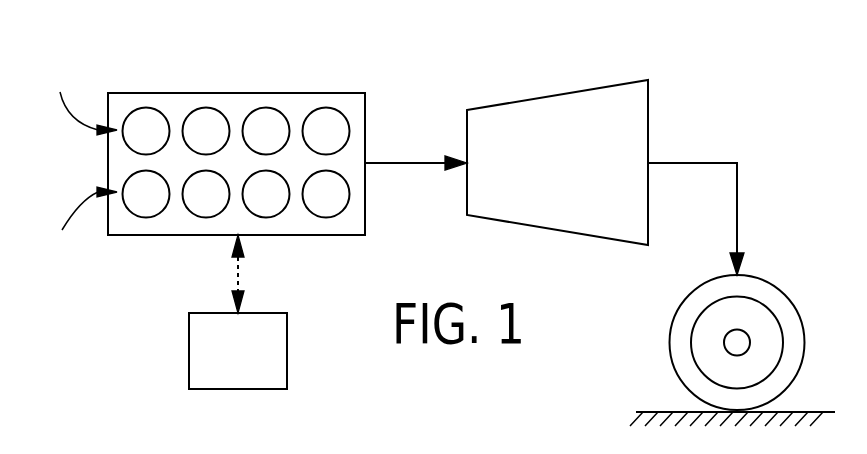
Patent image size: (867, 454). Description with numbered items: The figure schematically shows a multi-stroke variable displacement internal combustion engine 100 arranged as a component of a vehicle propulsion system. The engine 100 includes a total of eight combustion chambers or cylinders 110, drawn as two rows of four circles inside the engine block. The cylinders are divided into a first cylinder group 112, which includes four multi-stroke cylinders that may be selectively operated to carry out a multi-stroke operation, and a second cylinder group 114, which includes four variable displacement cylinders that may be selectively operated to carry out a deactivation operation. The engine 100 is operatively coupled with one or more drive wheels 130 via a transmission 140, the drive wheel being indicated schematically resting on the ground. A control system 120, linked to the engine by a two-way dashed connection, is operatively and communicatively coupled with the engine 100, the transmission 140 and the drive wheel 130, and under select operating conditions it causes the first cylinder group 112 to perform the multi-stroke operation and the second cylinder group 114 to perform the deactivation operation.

The multi-stroke variable displacement internal combustion engine 100 is at (284, 93).
The cylinders 110 is at (343, 177).
The first cylinder group 112 is at (82, 100).
The second cylinder group 114 is at (75, 222).
The control system 120 is at (255, 363).
The drive wheels 130 is at (675, 323).
The transmission 140 is at (575, 175).